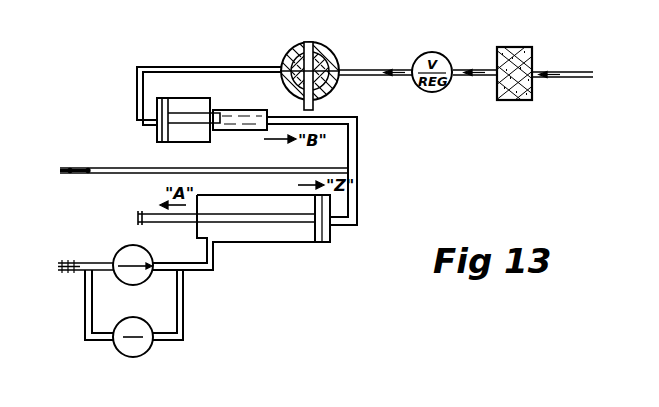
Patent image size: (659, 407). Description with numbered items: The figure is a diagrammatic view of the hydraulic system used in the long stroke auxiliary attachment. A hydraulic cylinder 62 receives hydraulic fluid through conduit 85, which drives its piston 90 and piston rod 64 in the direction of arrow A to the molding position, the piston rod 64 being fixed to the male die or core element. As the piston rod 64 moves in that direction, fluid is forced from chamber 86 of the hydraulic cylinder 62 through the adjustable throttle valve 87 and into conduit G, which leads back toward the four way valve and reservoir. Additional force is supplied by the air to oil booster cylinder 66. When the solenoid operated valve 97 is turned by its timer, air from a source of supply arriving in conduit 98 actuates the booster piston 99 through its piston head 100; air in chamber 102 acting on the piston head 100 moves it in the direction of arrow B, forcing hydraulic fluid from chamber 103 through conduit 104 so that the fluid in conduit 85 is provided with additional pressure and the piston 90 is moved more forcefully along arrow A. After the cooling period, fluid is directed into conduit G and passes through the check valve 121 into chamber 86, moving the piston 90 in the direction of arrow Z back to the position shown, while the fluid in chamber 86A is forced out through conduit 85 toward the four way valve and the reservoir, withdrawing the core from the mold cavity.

The solenoid operated valve 97 is at (328, 56).
The conduit 98 is at (578, 76).
The booster piston 99 is at (213, 118).
The air to oil booster cylinder 66 is at (187, 98).
The chamber 102 is at (155, 133).
The piston head 100 is at (162, 141).
The chamber 103 is at (233, 131).
The conduit 85 is at (79, 167).
The conduit 104 is at (357, 148).
The chamber 86 is at (237, 204).
The piston rod 64 is at (140, 213).
The chamber 86A is at (332, 232).
The hydraulic cylinder 62 is at (247, 244).
The piston 90 is at (322, 244).
The check valve 121 is at (120, 250).
The adjustable throttle valve 87 is at (120, 351).
The conduit G is at (70, 262).